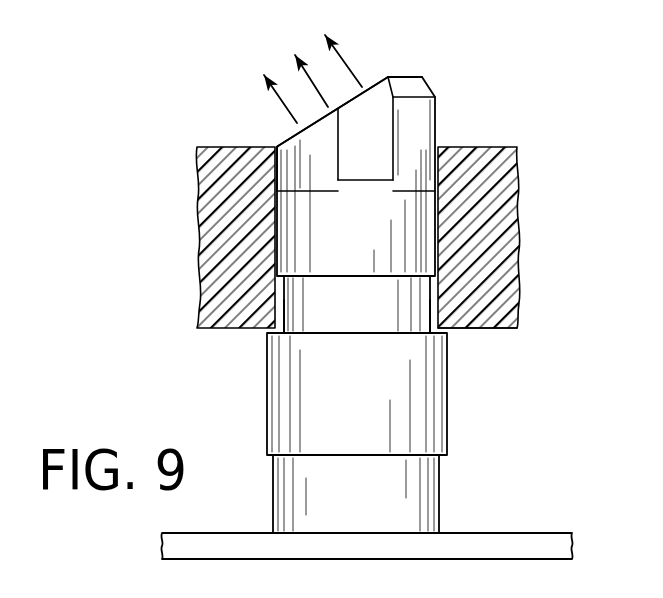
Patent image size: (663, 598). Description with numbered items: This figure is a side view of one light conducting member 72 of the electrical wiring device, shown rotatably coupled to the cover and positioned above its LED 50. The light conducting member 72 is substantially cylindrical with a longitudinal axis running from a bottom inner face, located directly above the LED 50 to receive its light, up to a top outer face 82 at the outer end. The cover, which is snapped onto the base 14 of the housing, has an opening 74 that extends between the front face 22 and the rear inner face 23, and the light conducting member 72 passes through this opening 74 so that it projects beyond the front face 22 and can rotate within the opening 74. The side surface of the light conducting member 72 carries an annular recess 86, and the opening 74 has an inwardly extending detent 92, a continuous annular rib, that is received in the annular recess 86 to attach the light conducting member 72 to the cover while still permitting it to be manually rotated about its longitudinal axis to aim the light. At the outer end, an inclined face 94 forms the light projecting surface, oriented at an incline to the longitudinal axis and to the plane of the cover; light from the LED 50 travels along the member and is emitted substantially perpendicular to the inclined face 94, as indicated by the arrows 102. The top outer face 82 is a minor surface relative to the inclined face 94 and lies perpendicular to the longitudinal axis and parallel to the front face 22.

The base 14 is at (532, 533).
The front face 22 is at (497, 148).
The rear inner face 23 is at (505, 328).
The LED 50 is at (440, 488).
The light conducting member 72 is at (440, 112).
The opening 74 is at (276, 147).
The top outer face 82 is at (408, 77).
The annular recess 86 is at (368, 310).
The detent 92 is at (283, 305).
The inclined face 94 is at (377, 83).
The arrows 102 is at (280, 98).